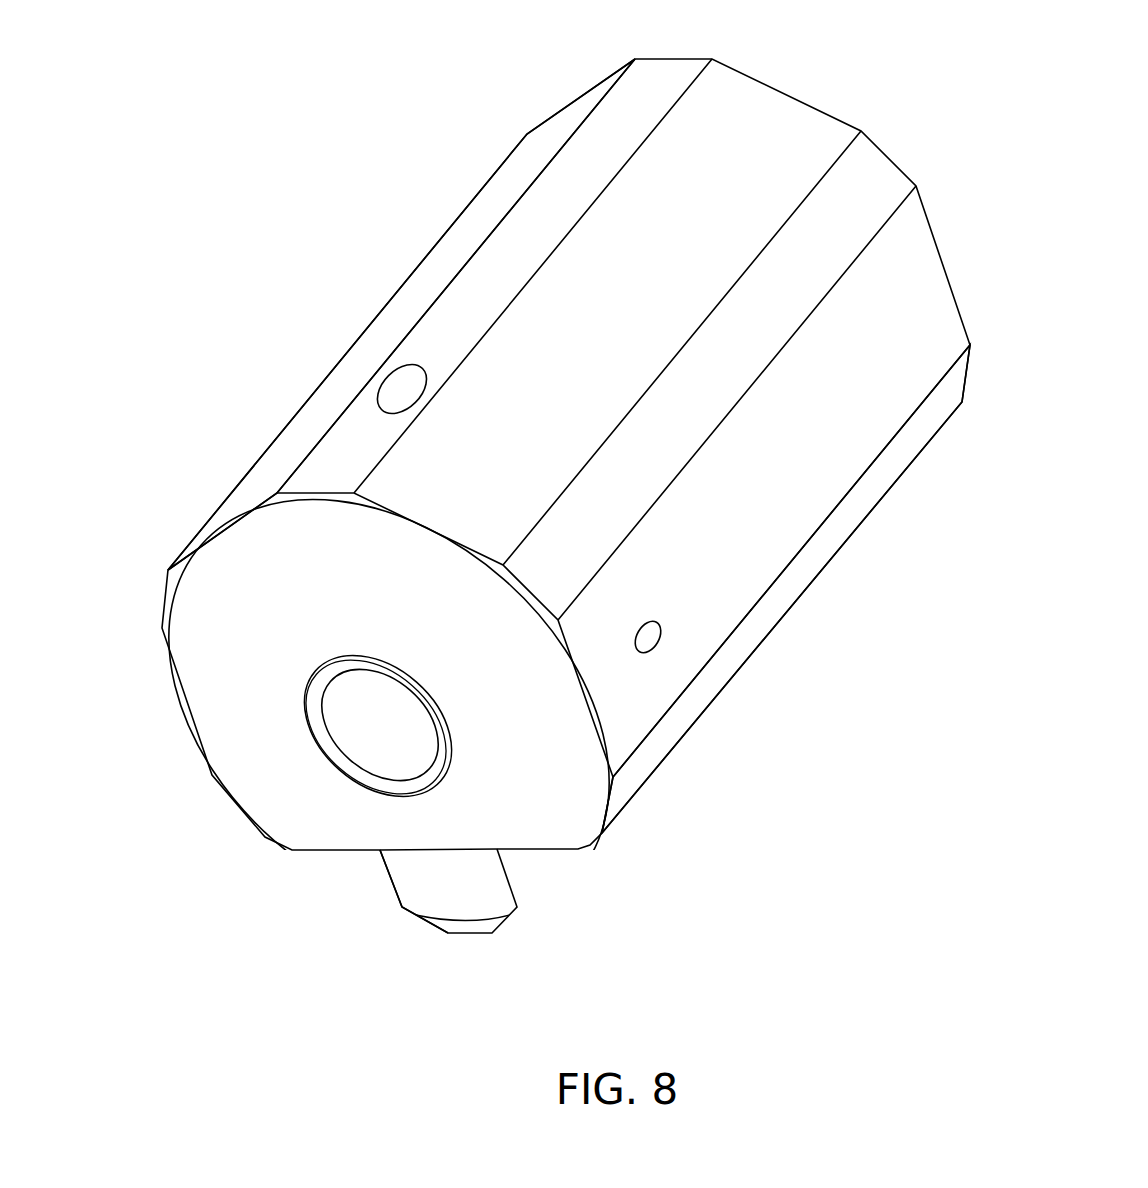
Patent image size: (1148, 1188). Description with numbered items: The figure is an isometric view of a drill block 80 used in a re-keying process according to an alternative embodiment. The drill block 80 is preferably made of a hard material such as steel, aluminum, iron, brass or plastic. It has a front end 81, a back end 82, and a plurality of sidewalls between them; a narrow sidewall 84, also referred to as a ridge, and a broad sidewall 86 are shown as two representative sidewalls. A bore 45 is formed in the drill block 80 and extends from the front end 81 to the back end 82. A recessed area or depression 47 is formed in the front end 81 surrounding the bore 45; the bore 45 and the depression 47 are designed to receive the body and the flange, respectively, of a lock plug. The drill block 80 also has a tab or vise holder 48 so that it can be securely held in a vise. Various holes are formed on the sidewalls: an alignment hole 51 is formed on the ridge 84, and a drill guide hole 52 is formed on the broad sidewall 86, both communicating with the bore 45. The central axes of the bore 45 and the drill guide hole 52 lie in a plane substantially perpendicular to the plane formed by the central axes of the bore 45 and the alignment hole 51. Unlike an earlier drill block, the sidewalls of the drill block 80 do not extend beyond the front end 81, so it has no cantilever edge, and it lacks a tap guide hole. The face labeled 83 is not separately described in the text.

The drill block 80 is at (528, 503).
The back end 82 is at (786, 92).
The narrow sidewall 84 is at (493, 277).
The broad sidewall 86 is at (872, 439).
The front end 81 is at (290, 762).
The circular front face 83 is at (207, 647).
The bore 45 is at (408, 742).
The depression 47 is at (375, 778).
The vise holder 48 is at (518, 877).
The alignment hole 51 is at (372, 388).
The drill guide hole 52 is at (662, 637).